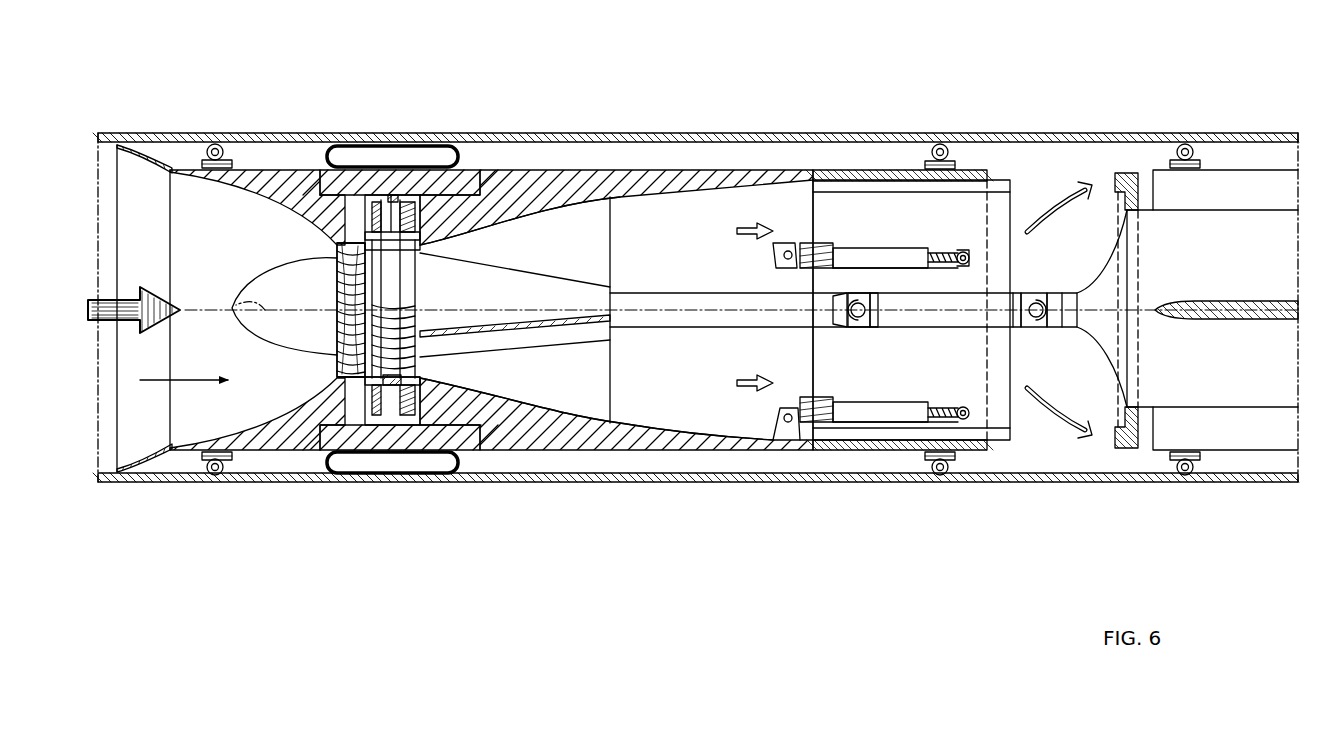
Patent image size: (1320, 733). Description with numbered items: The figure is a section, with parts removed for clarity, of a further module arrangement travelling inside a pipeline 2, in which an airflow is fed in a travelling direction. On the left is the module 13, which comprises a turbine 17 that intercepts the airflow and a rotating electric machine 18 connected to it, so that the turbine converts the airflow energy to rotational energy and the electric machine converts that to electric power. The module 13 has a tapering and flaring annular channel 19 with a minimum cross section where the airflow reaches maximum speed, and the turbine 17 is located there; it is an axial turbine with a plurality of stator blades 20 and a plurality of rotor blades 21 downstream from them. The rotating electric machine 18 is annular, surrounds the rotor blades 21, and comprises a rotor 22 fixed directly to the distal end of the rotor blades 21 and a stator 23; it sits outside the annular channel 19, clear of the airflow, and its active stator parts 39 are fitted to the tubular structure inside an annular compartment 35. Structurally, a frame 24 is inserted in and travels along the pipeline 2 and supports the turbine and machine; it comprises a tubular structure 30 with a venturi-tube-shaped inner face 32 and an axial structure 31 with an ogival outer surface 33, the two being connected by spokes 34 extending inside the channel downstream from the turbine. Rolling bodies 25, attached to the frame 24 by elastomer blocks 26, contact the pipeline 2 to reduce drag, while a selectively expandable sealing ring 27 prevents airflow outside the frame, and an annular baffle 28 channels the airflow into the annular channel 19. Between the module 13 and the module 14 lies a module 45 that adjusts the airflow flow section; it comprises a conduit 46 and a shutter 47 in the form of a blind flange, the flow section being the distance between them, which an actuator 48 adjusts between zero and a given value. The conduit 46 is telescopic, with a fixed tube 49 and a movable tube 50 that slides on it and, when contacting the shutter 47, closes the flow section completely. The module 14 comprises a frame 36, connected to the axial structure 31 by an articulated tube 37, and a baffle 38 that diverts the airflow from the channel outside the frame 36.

The pipeline 2 is at (692, 133).
The module 13 is at (757, 125).
The module 14 is at (1208, 127).
The turbine 17 is at (325, 252).
The rotating electric machine 18 is at (322, 192).
The annular channel 19 is at (287, 228).
The stator blades 20 is at (348, 306).
The rotor blades 21 is at (412, 256).
The rotor 22 is at (420, 193).
The stator 23 is at (430, 212).
The frame 24 is at (612, 150).
The rolling bodies 25 is at (218, 143).
The elastomer blocks 26 is at (193, 157).
The sealing ring 27 is at (470, 455).
The annular baffle 28 is at (153, 165).
The tubular structure 30 is at (590, 445).
The axial structure 31 is at (557, 338).
The inner face 32 is at (518, 232).
The ogival outer surface 33 is at (605, 266).
The spokes 34 is at (602, 213).
The annular compartment 35 is at (393, 193).
The frame 36 is at (1152, 415).
The tube 37 is at (889, 320).
The baffle 38 is at (1098, 296).
The active stator parts 39 is at (360, 192).
The module 45 is at (1084, 120).
The conduit 46 is at (979, 172).
The shutter 47 is at (1131, 170).
The actuator 48 is at (854, 250).
The fixed tube 49 is at (900, 450).
The movable tube 50 is at (934, 184).